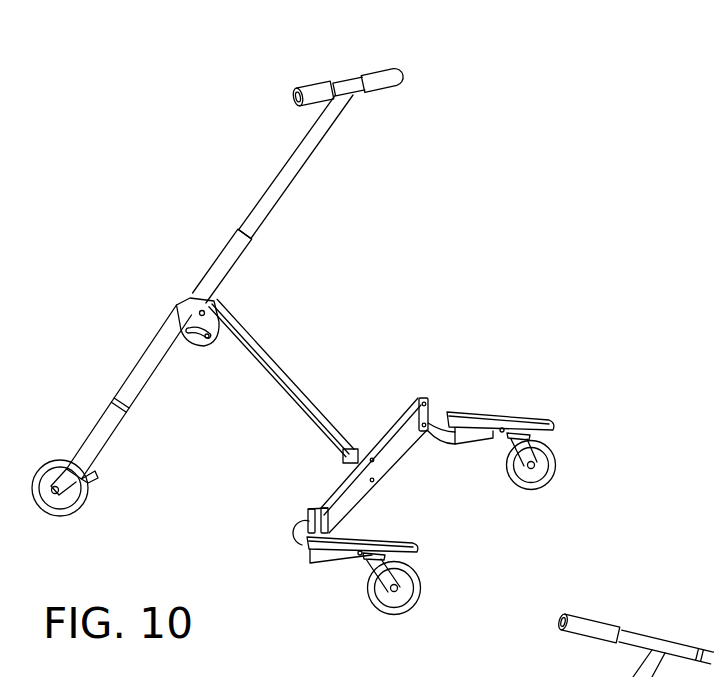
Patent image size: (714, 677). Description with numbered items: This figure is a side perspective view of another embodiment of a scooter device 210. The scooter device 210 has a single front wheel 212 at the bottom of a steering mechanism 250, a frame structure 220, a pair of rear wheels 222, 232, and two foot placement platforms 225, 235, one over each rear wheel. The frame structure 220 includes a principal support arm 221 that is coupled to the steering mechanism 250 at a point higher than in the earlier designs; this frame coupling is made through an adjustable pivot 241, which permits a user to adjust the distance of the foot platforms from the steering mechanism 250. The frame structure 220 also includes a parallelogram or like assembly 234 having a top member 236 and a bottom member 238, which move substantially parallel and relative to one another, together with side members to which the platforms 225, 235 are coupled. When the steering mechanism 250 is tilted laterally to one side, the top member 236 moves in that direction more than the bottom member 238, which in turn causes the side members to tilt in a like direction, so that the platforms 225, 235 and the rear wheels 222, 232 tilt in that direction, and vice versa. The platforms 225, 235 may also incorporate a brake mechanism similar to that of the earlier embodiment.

The scooter device 210 is at (461, 172).
The front wheel 212 is at (83, 503).
The frame structure 220 is at (357, 340).
The principal support arm 221 is at (268, 358).
The rear wheel 222 is at (419, 587).
The foot placement platform 225 is at (387, 538).
The rear wheel 232 is at (552, 478).
The parallelogram assembly 234 is at (428, 388).
The foot placement platform 235 is at (515, 410).
The top member 236 is at (395, 420).
The bottom member 238 is at (392, 462).
The adjustable pivot 241 is at (200, 352).
The steering mechanism 250 is at (305, 68).